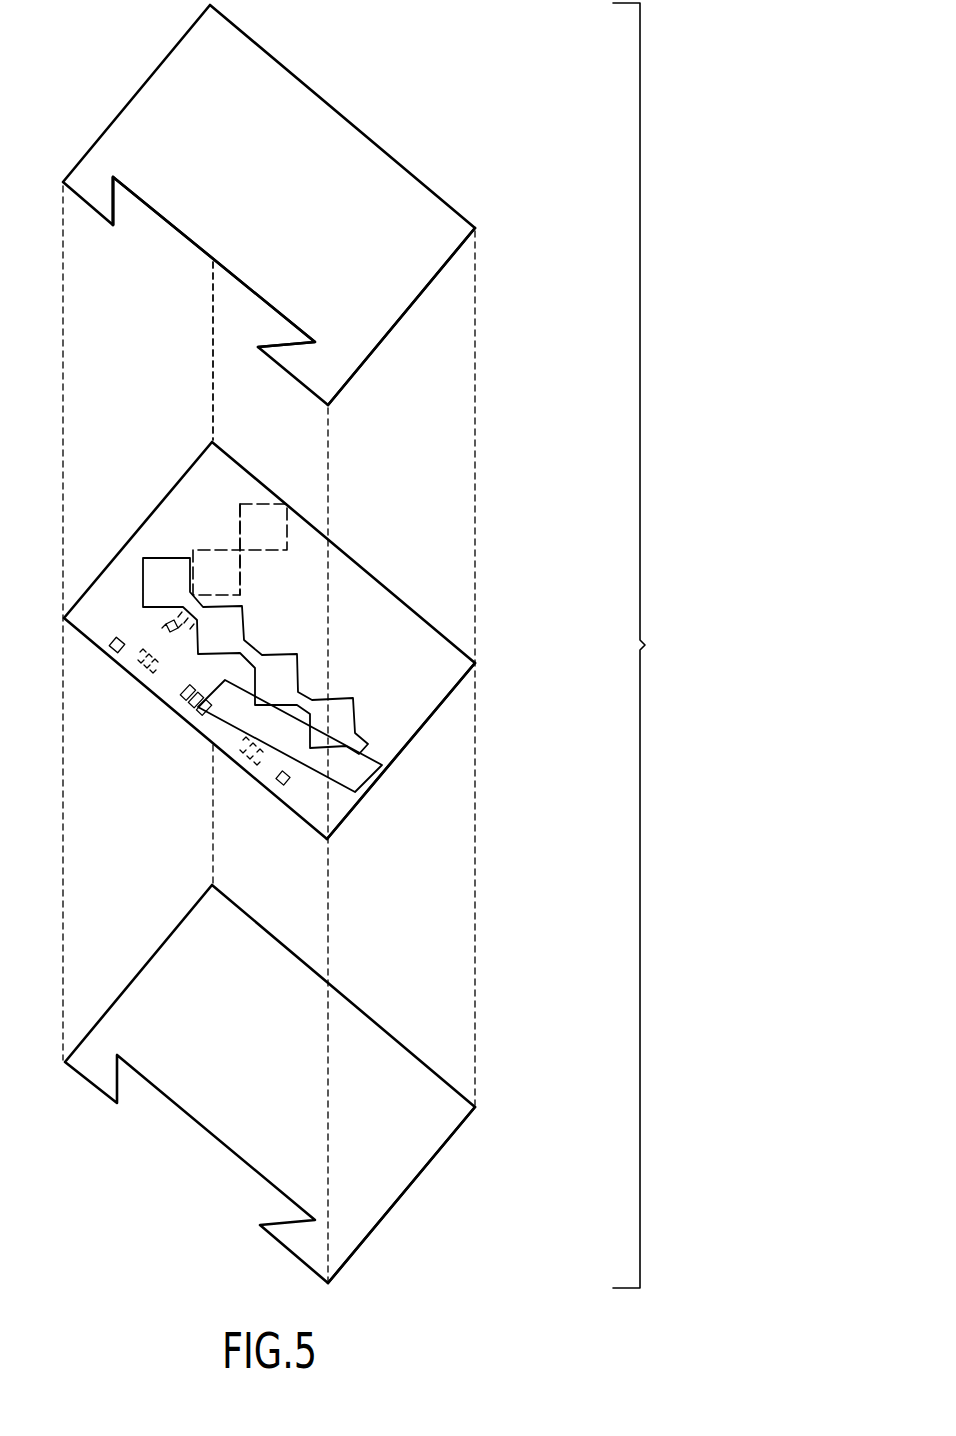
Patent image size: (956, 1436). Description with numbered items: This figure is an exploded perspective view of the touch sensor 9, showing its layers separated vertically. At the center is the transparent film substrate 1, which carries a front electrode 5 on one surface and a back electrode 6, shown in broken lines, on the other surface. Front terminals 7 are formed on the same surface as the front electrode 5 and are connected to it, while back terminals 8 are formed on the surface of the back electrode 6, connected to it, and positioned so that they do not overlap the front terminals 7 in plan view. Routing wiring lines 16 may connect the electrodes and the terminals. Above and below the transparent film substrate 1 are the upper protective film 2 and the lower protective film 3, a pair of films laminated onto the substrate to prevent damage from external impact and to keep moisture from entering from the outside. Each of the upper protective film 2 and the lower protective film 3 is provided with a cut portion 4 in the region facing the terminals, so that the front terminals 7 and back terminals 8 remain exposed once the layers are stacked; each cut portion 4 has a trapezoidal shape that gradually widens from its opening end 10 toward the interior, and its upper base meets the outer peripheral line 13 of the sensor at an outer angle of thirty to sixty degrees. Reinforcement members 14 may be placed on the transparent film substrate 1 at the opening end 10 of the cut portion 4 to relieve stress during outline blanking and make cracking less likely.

The transparent film substrate 1 is at (380, 615).
The upper protective film 2 is at (325, 165).
The lower protective film 3 is at (395, 1058).
The cut portion 4 is at (130, 170).
The front electrode 5 is at (347, 732).
The back electrode 6 is at (275, 530).
The front terminals 7 is at (180, 692).
The back terminals 8 is at (110, 650).
The touch sensor 9 is at (645, 645).
The opening end 10 is at (115, 242).
The outer peripheral line 13 is at (388, 333).
The reinforcement member 14 is at (285, 786).
The routing wiring lines 16 is at (367, 785).